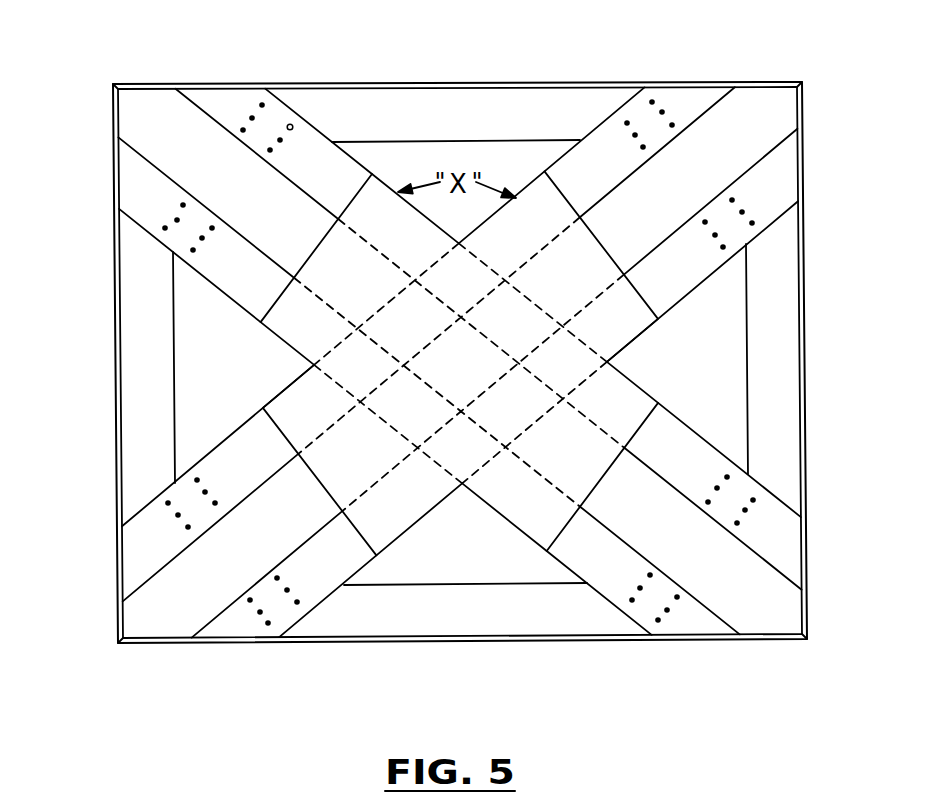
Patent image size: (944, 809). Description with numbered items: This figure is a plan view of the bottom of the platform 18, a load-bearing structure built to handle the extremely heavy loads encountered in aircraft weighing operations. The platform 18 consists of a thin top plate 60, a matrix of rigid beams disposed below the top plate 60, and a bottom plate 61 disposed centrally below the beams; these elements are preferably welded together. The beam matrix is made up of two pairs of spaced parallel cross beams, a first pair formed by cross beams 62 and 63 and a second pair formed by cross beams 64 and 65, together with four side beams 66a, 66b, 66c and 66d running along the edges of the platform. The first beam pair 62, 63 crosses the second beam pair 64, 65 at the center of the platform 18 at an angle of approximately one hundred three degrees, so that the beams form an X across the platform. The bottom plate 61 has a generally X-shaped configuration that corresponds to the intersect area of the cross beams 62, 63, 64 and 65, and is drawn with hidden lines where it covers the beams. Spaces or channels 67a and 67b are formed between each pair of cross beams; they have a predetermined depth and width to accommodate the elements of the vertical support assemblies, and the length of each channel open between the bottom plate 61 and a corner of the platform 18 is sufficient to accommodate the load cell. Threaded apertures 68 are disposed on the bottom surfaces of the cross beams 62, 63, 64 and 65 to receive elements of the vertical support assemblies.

The platform 18 is at (277, 680).
The top plate 60 is at (189, 160).
The bottom plate 61 is at (314, 337).
The cross beam 62 is at (690, 438).
The cross beam 63 is at (603, 540).
The cross beam 64 is at (237, 447).
The cross beam 65 is at (302, 548).
The side beam 66a is at (446, 95).
The side beam 66b is at (135, 338).
The side beam 66c is at (445, 620).
The side beam 66d is at (786, 375).
The space or channel 67a is at (262, 200).
The space or channel 67b is at (678, 180).
The threaded apertures 68 is at (177, 220).